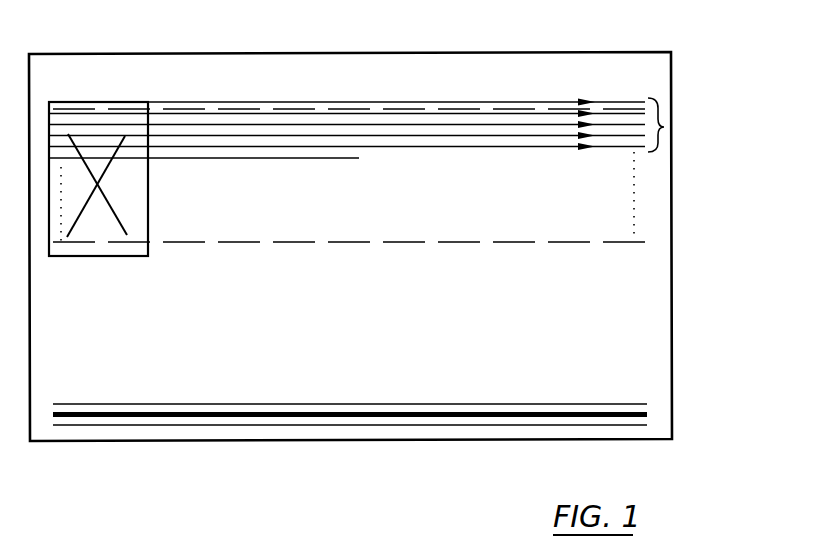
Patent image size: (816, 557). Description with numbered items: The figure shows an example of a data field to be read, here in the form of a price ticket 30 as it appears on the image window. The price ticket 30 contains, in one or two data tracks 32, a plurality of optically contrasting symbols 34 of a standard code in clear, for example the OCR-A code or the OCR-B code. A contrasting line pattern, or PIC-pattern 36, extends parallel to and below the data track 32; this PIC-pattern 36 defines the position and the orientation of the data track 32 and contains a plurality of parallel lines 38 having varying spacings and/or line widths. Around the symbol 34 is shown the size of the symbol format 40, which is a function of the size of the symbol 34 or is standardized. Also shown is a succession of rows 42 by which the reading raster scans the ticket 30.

The price ticket 30 is at (582, 52).
The data track 32 is at (452, 109).
The symbol 34 is at (122, 215).
The PIC-pattern 36 is at (427, 396).
The parallel lines 38 is at (648, 408).
The symbol format 40 is at (147, 256).
The rows 42 is at (664, 127).